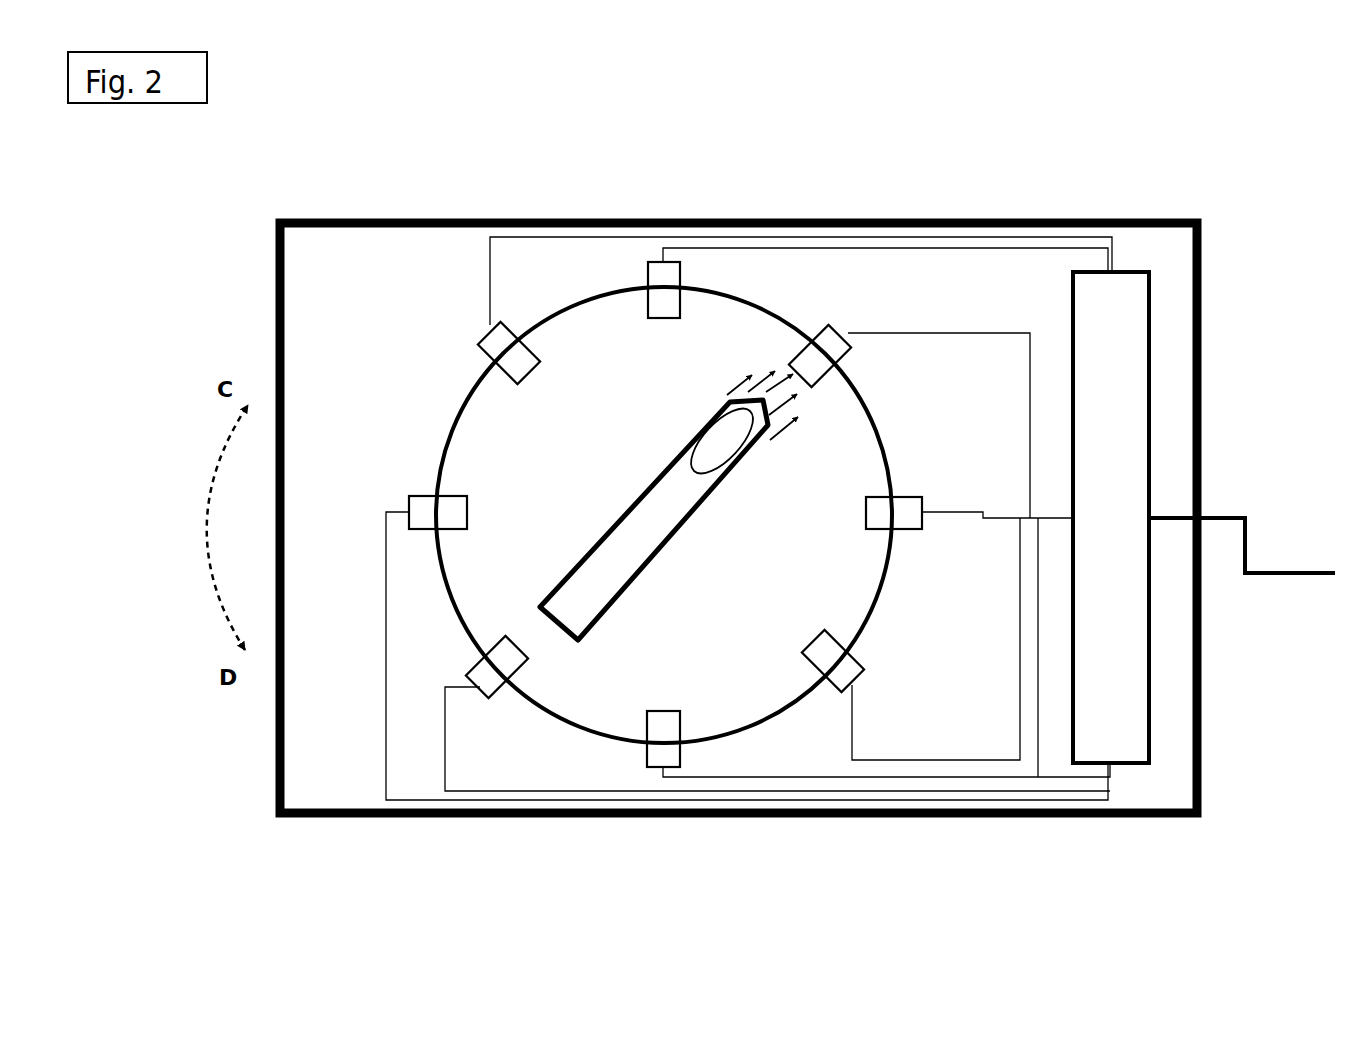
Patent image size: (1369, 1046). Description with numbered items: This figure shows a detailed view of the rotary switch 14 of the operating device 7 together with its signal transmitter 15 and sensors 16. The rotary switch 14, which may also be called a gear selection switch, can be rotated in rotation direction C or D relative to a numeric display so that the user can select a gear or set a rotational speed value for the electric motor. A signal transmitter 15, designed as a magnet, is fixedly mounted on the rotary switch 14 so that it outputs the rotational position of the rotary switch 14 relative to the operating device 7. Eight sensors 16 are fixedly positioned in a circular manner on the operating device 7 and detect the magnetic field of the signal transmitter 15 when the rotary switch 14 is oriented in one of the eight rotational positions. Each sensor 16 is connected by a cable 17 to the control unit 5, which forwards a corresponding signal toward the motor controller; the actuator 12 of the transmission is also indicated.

The control unit 5 is at (1125, 730).
The operating device 7 is at (327, 767).
The actuator 12 is at (707, 668).
The rotary switch 14 is at (610, 578).
The signal transmitter 15 is at (722, 440).
The sensor 16 is at (820, 338).
The cable 17 is at (868, 328).